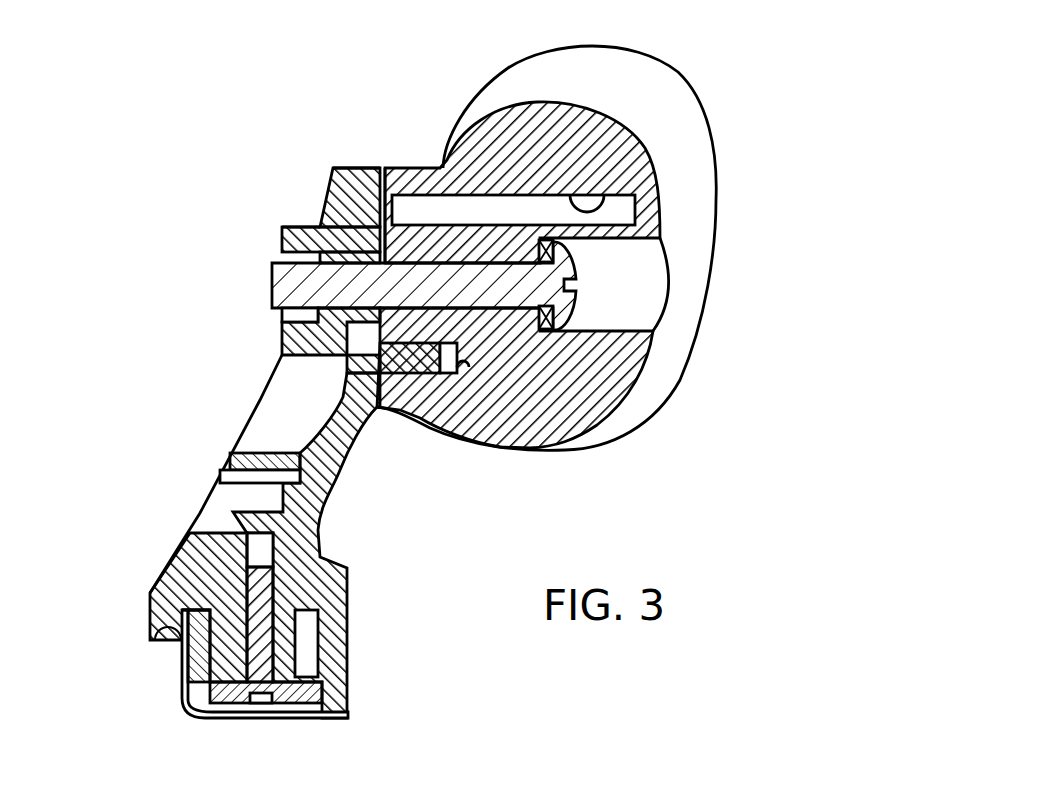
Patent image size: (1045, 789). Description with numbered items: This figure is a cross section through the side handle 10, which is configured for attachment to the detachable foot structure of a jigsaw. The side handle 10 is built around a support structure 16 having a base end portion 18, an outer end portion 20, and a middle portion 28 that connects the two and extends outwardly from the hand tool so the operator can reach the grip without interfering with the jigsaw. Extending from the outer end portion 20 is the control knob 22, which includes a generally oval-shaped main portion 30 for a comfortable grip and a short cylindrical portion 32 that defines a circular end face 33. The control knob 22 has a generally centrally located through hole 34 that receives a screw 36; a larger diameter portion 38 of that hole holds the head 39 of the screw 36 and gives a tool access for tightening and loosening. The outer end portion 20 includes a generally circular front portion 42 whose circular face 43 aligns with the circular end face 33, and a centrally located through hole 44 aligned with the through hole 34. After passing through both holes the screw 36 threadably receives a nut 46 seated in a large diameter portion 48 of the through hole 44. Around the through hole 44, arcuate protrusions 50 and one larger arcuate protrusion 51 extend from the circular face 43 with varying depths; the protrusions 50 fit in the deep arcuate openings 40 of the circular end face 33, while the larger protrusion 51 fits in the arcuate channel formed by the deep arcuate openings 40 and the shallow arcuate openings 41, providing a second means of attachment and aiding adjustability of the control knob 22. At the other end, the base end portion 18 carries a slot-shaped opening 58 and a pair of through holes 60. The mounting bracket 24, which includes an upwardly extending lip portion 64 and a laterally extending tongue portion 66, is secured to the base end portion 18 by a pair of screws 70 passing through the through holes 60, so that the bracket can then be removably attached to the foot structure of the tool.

The side handle 10 is at (172, 146).
The support structure 16 is at (150, 509).
The base end portion 18 is at (150, 618).
The outer end portion 20 is at (281, 237).
The control knob 22 is at (628, 36).
The mounting bracket 24 is at (172, 672).
The middle portion 28 is at (236, 455).
The oval-shaped main portion 30 is at (719, 197).
The cylindrical portion 32 is at (412, 166).
The circular end face 33 is at (347, 378).
The through hole 34 is at (515, 305).
The screw 36 is at (291, 286).
The larger diameter portion 38 is at (648, 294).
The head 39 is at (557, 262).
The deep arcuate openings 40 is at (610, 193).
The shallow arcuate openings 41 is at (458, 372).
The circular front portion 42 is at (348, 167).
The circular face 43 is at (400, 226).
The through hole 44 is at (331, 190).
The nut 46 is at (296, 315).
The large diameter portion 48 is at (304, 226).
The arcuate protrusions 50 is at (385, 206).
The larger arcuate protrusion 51 is at (403, 364).
The slot-shaped opening 58 is at (160, 641).
The through holes 60 is at (258, 548).
The lip portion 64 is at (196, 690).
The tongue portion 66 is at (260, 704).
The screws 70 is at (258, 636).